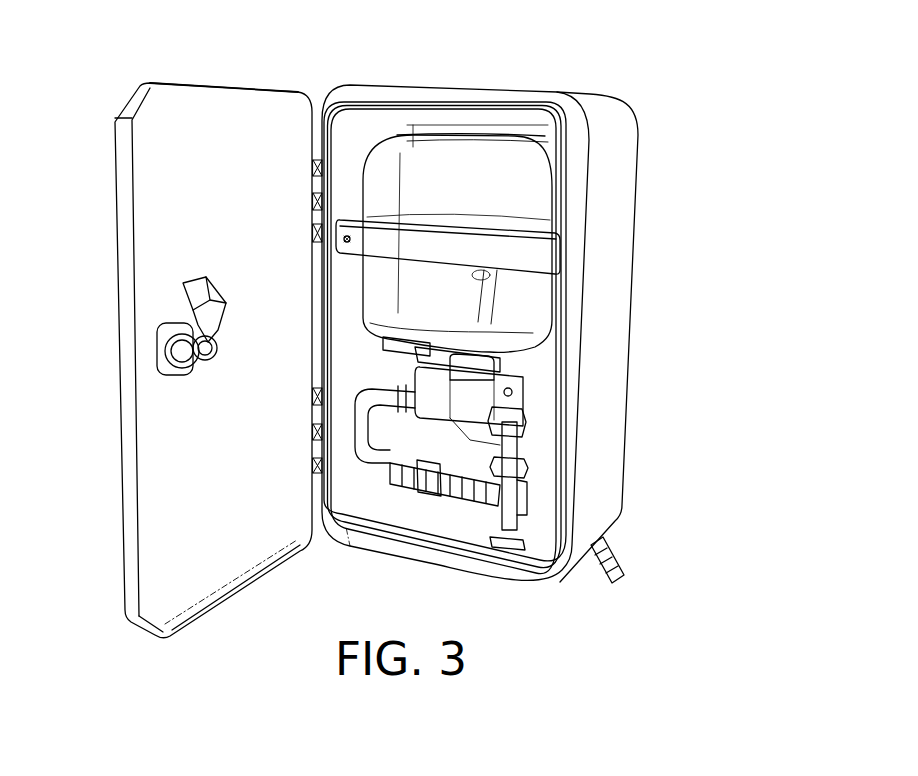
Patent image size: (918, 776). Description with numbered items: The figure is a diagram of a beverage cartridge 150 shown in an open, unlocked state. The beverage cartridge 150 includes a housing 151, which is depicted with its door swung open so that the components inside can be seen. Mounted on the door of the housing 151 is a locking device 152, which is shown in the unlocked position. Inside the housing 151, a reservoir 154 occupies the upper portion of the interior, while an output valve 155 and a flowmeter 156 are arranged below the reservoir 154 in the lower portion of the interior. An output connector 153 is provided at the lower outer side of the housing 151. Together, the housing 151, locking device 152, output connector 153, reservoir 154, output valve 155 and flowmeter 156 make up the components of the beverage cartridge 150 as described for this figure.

The beverage cartridge 150 is at (399, 324).
The housing 151 is at (525, 334).
The locking device 152 is at (167, 355).
The output connector 153 is at (620, 562).
The reservoir 154 is at (535, 302).
The output valve 155 is at (465, 400).
The flowmeter 156 is at (512, 475).